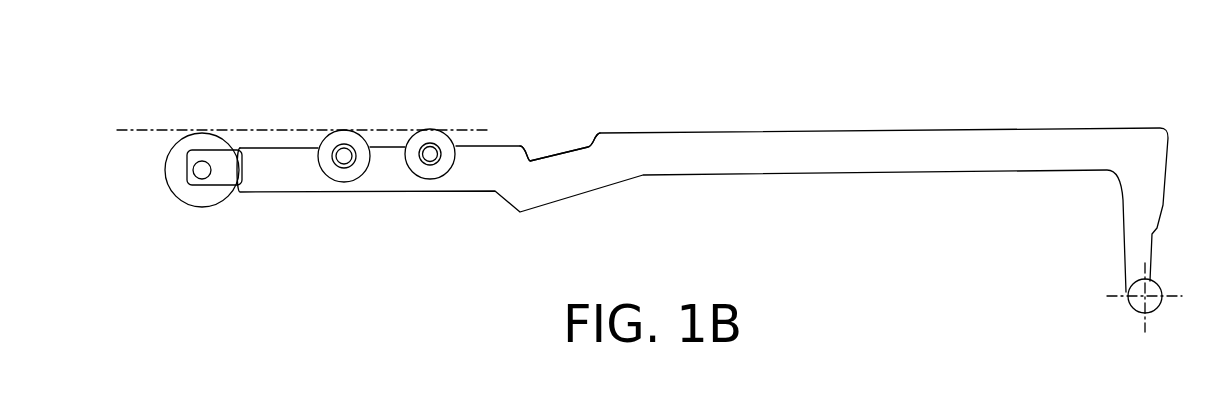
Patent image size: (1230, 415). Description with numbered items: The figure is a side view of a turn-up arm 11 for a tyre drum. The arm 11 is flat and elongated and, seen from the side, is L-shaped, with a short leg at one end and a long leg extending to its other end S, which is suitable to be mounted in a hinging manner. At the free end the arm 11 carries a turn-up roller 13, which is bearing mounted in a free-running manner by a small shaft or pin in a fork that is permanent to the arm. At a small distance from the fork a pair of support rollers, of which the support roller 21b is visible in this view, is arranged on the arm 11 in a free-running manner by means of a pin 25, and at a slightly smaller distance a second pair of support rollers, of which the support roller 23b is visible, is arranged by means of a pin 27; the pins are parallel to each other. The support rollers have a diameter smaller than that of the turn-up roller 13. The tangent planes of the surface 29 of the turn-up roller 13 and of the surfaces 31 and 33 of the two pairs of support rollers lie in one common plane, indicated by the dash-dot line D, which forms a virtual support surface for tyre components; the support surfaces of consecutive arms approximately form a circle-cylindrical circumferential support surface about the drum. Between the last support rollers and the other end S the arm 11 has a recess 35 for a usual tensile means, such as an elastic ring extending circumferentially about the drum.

The turn-up arm 11 is at (662, 194).
The turn-up roller 13 is at (198, 197).
The surface of the turn-up roller 29 is at (168, 172).
The surface of the support rollers 31 is at (366, 130).
The surface of the second support rollers 33 is at (452, 130).
The support roller 21b is at (358, 170).
The second support roller 23b is at (448, 160).
The pin 25 is at (344, 164).
The pin 27 is at (430, 162).
The recess 35 is at (563, 140).
The reference axis D is at (157, 130).
The other end S is at (1152, 308).